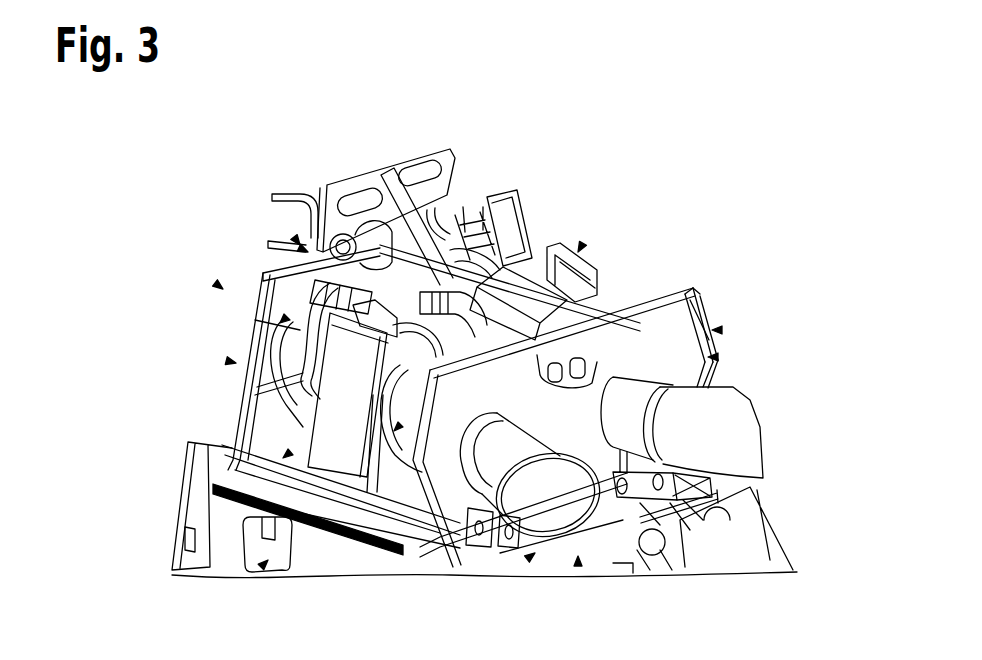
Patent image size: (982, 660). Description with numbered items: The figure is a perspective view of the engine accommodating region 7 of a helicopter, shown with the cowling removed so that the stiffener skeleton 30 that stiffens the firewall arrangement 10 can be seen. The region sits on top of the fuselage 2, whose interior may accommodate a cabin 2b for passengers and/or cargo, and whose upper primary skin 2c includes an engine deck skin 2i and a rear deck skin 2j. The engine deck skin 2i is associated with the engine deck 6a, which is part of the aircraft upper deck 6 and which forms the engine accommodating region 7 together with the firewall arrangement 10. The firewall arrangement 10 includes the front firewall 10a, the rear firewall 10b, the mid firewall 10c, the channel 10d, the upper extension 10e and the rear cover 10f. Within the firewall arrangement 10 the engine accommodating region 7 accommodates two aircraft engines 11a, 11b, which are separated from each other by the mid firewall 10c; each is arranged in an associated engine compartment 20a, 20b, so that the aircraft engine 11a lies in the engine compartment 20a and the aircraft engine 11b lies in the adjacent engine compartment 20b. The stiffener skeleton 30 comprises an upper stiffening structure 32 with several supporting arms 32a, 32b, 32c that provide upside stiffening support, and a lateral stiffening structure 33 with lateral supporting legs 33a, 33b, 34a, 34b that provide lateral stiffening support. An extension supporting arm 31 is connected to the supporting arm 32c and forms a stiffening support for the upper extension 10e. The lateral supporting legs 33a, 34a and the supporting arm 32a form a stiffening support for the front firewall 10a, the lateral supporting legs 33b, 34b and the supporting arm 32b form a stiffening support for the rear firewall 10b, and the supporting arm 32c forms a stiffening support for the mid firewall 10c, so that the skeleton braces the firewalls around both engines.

The fuselage 2 is at (232, 540).
The cabin 2b is at (288, 459).
The upper primary skin 2c is at (578, 566).
The engine deck skin 2i is at (215, 452).
The rear deck skin 2j is at (527, 559).
The aircraft upper deck 6 is at (582, 245).
The engine deck 6a is at (220, 287).
The engine accommodating region 7 is at (230, 362).
The firewall arrangement 10 is at (718, 357).
The front firewall 10a is at (282, 320).
The rear firewall 10b is at (678, 330).
The mid firewall 10c is at (520, 235).
The channel 10d is at (627, 555).
The upper extension 10e is at (348, 190).
The rear cover 10f is at (453, 530).
The aircraft engine 11a is at (620, 302).
The aircraft engine 11b is at (363, 560).
The engine compartment 20a is at (478, 205).
The engine compartment 20b is at (258, 278).
The stiffener skeleton 30 is at (497, 205).
The extension supporting arm 31 is at (390, 168).
The upper stiffening structure 32 is at (297, 240).
The supporting arm 32a is at (298, 249).
The supporting arm 32b is at (673, 290).
The supporting arm 32c is at (612, 300).
The lateral stiffening structure 33 is at (722, 330).
The lateral supporting leg 33a is at (238, 398).
The lateral supporting leg 33b is at (400, 560).
The lateral supporting leg 34a is at (520, 240).
The lateral supporting leg 34b is at (707, 390).